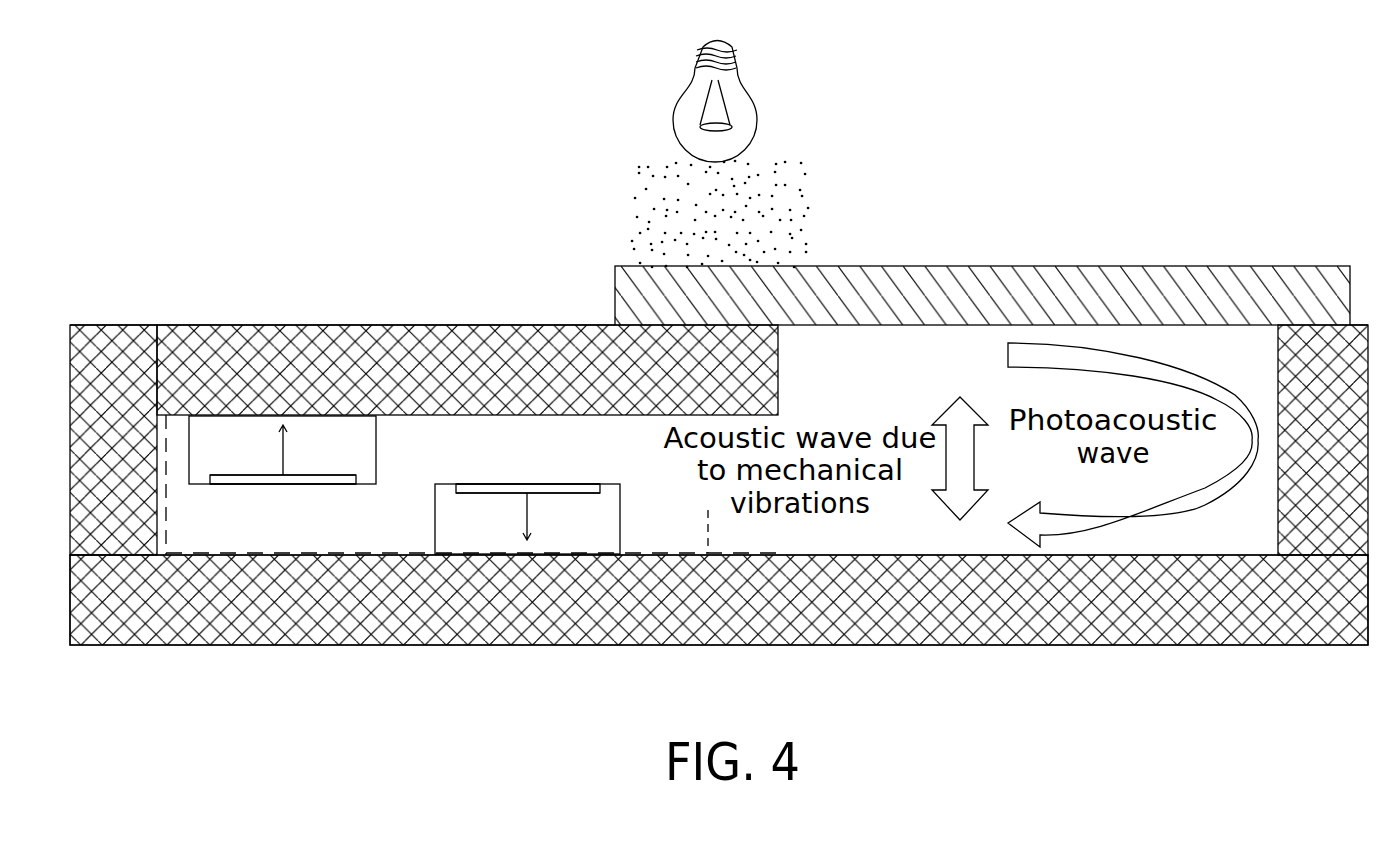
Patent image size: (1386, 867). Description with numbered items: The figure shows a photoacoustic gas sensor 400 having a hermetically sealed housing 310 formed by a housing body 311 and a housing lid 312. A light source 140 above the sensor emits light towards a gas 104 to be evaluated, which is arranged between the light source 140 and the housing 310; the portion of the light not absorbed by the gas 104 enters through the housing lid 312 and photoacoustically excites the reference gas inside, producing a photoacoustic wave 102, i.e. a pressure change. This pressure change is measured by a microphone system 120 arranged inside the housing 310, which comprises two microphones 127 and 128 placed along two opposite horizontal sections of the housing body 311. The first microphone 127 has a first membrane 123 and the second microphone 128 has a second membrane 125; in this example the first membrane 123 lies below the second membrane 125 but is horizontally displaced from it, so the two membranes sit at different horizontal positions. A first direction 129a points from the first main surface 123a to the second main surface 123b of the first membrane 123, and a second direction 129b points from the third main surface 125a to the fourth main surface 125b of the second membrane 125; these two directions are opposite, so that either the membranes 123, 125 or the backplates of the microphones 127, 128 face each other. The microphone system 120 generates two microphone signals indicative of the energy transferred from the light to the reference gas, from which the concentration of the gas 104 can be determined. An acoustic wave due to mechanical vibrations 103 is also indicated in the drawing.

The photoacoustic gas sensor 400 is at (125, 745).
The light source 140 is at (752, 98).
The gas 104 is at (800, 186).
The housing lid 312 is at (1068, 265).
The housing 310 is at (1253, 638).
The housing body 311 is at (1128, 615).
The photoacoustic wave 102 is at (1199, 376).
The acoustic wave due to mechanical vibrations 103 is at (947, 407).
The microphone system 120 is at (708, 548).
The second microphone 128 is at (377, 463).
The second membrane 125 is at (317, 485).
The third main surface 125a is at (240, 486).
The fourth main surface 125b is at (253, 474).
The second direction 129b is at (286, 447).
The first microphone 127 is at (621, 500).
The first membrane 123 is at (578, 483).
The first main surface 123a is at (477, 484).
The second main surface 123b is at (497, 496).
The first direction 129a is at (530, 522).